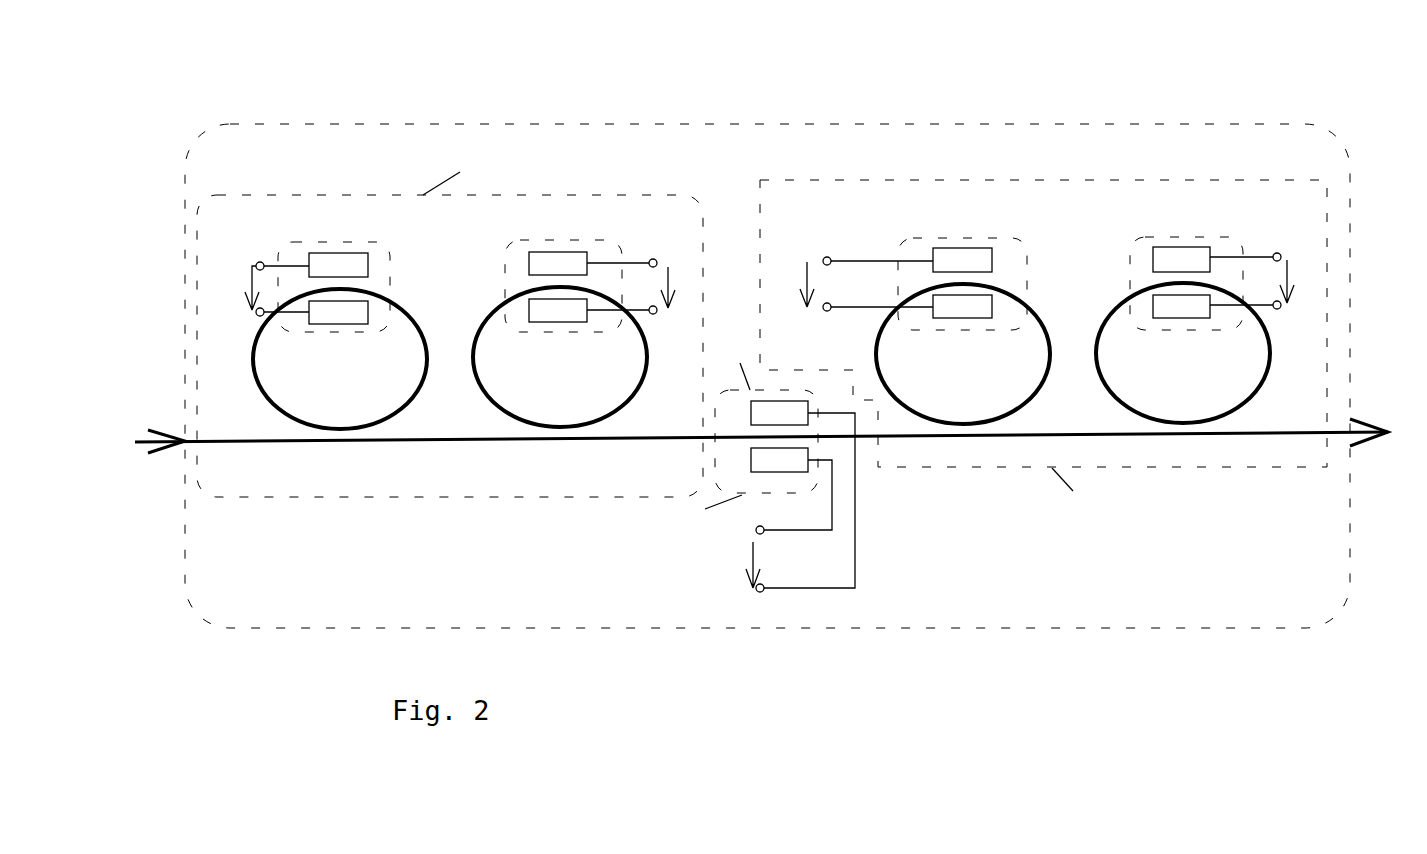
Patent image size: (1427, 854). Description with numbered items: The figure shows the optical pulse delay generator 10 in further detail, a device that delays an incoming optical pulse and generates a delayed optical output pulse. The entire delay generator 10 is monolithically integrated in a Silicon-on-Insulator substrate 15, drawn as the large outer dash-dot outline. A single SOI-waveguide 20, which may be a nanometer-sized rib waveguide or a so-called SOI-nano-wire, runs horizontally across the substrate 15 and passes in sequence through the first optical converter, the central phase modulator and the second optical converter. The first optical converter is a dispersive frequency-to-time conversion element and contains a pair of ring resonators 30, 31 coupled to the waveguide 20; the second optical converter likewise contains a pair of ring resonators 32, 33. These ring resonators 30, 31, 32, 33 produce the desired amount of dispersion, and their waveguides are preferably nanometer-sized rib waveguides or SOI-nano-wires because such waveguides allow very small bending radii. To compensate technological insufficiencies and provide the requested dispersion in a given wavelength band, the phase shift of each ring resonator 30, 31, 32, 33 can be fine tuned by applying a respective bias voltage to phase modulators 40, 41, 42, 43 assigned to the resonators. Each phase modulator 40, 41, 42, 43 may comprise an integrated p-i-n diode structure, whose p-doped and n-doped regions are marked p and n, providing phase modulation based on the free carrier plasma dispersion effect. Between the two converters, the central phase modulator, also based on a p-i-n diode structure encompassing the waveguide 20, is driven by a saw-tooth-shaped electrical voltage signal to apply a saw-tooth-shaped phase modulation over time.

The delay generator 10 is at (603, 101).
The SOI-substrate 15 is at (570, 626).
The SOI-waveguide 20 is at (440, 441).
The ring resonator 30 is at (415, 395).
The ring resonator 31 is at (630, 397).
The ring resonator 32 is at (1047, 378).
The ring resonator 33 is at (1268, 372).
The phase modulator 40 is at (390, 275).
The phase modulator 41 is at (553, 240).
The phase modulator 42 is at (957, 237).
The phase modulator 43 is at (1175, 235).